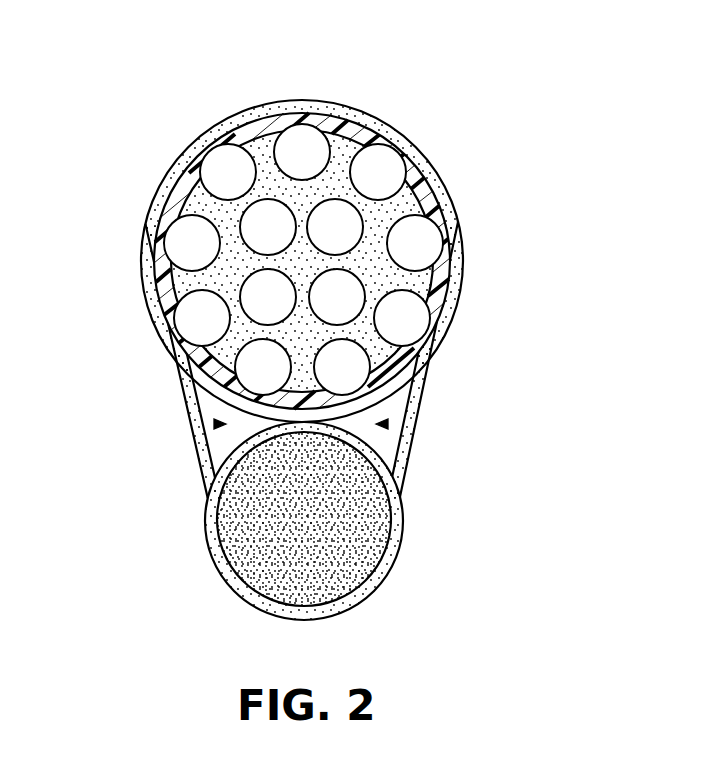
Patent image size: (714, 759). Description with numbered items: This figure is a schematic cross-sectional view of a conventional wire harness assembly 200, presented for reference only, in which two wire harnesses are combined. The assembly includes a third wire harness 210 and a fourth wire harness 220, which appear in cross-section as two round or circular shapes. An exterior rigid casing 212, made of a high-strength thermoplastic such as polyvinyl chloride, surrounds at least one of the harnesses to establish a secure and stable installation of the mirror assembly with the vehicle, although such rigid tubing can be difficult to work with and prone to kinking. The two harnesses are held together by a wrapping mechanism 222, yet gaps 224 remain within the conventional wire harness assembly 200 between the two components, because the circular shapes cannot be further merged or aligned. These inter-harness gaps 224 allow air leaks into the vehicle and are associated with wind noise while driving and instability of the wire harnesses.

The conventional wire harness assembly 200 is at (297, 342).
The third wire harness 210 is at (250, 360).
The exterior rigid casing 212 is at (438, 283).
The fourth wire harness 220 is at (300, 580).
The wrapping mechanism 222 is at (177, 413).
The gaps 224 is at (214, 424).